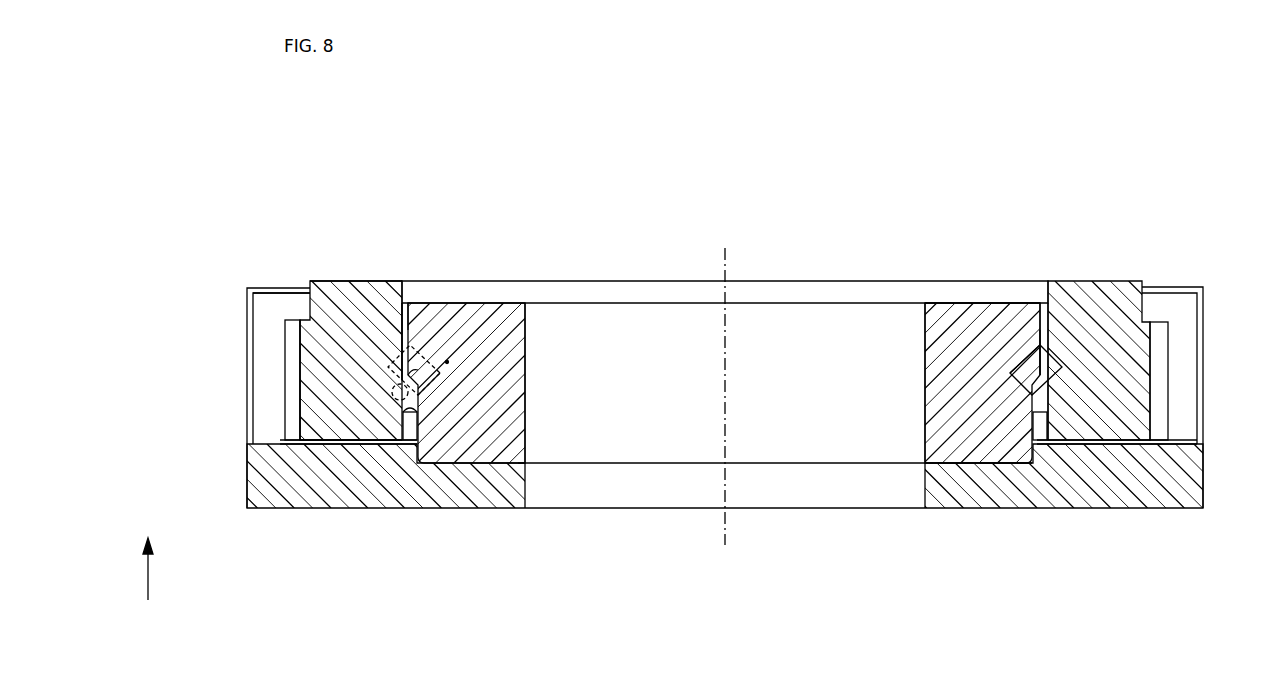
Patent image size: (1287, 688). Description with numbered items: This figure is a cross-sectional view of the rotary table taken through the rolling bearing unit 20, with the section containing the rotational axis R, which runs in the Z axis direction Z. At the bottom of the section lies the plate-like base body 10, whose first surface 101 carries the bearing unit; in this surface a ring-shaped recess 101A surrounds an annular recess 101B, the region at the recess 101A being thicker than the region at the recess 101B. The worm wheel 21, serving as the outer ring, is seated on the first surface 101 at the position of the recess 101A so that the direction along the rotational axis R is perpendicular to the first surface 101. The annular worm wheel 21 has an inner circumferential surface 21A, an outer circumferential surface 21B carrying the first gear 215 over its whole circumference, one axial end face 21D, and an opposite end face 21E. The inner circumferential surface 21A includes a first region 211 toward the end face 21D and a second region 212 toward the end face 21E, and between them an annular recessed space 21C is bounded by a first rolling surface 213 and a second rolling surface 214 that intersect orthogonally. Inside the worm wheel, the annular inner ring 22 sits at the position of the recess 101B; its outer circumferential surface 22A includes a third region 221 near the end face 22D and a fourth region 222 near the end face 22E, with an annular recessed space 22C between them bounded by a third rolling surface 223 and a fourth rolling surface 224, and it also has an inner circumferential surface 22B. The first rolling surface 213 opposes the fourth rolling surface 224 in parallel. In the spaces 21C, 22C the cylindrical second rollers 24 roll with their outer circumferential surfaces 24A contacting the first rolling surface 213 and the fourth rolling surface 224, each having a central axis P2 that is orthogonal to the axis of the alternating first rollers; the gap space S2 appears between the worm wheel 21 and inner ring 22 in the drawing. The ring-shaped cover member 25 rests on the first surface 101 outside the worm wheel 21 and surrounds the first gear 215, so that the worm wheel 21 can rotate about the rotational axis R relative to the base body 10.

The base body 10 is at (247, 465).
The rolling bearing unit 20 is at (722, 383).
The worm wheel 21 is at (362, 290).
The inner circumferential surface 21A is at (347, 468).
The outer circumferential surface 21B is at (295, 288).
The space 21C is at (434, 348).
The end face 21D is at (340, 281).
The end face 21E is at (317, 440).
The inner ring 22 is at (496, 322).
The outer circumferential surface 22A is at (1101, 294).
The inner circumferential surface 22B is at (523, 343).
The space 22C is at (1050, 391).
The end face 22D is at (988, 302).
The end face 22E is at (1012, 463).
The second roller 24 is at (418, 424).
The outer circumferential surface 24A is at (424, 400).
The cover member 25 is at (250, 339).
The first surface 101 is at (283, 442).
The recess 101A is at (260, 288).
The recess 101B is at (530, 466).
The first region 211 is at (406, 335).
The second region 212 is at (428, 395).
The first rolling surface 213 is at (408, 368).
The second rolling surface 214 is at (414, 390).
The first gear 215 is at (289, 372).
The third region 221 is at (1038, 362).
The fourth region 222 is at (1130, 385).
The third rolling surface 223 is at (1046, 360).
The fourth rolling surface 224 is at (1046, 408).
The central axis P2 is at (447, 360).
The gap space S2 is at (410, 335).
The rotational axis R is at (726, 256).
The Z axis direction Z is at (148, 558).